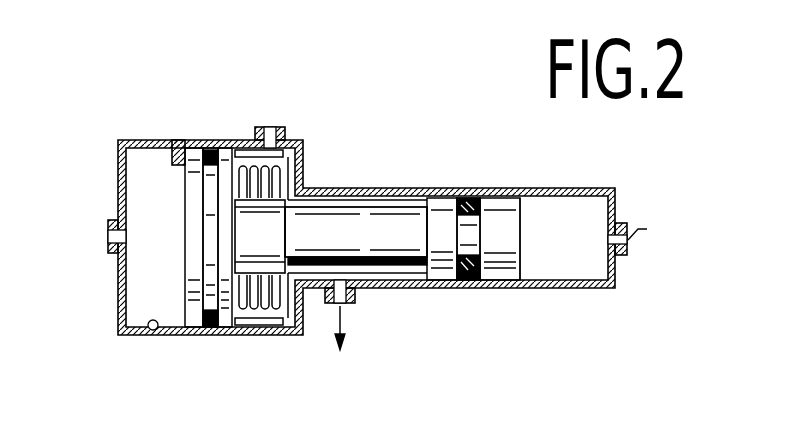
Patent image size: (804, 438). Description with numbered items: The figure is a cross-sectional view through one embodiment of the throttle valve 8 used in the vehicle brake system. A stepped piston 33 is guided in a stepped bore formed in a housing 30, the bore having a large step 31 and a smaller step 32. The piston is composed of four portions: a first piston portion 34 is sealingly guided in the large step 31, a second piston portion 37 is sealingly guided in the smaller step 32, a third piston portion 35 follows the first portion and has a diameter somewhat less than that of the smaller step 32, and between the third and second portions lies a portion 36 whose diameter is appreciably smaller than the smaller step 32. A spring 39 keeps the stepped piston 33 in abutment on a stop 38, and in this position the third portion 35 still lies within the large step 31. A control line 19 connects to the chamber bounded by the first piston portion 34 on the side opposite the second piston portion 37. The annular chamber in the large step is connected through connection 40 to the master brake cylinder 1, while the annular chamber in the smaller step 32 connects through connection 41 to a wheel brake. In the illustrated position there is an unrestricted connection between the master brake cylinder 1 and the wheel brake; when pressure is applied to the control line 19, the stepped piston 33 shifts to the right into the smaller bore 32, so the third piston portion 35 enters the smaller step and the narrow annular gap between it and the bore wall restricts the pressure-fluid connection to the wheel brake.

The master brake cylinder 1 is at (270, 120).
The valve assembly 8 is at (408, 120).
The control line 19 is at (108, 243).
The housing 30 is at (375, 190).
The large step of the stepped bore 31 is at (155, 335).
The smaller step of the stepped bore 32 is at (568, 290).
The stepped piston 33 is at (403, 282).
The first piston portion 34 is at (197, 203).
The third piston portion 35 is at (272, 246).
The fourth piston portion 36 is at (357, 246).
The second piston portion 37 is at (500, 220).
The stop 38 is at (175, 145).
The spring 39 is at (292, 168).
The connection to master brake cylinder 40 is at (278, 128).
The connection to wheel brake 41 is at (345, 301).